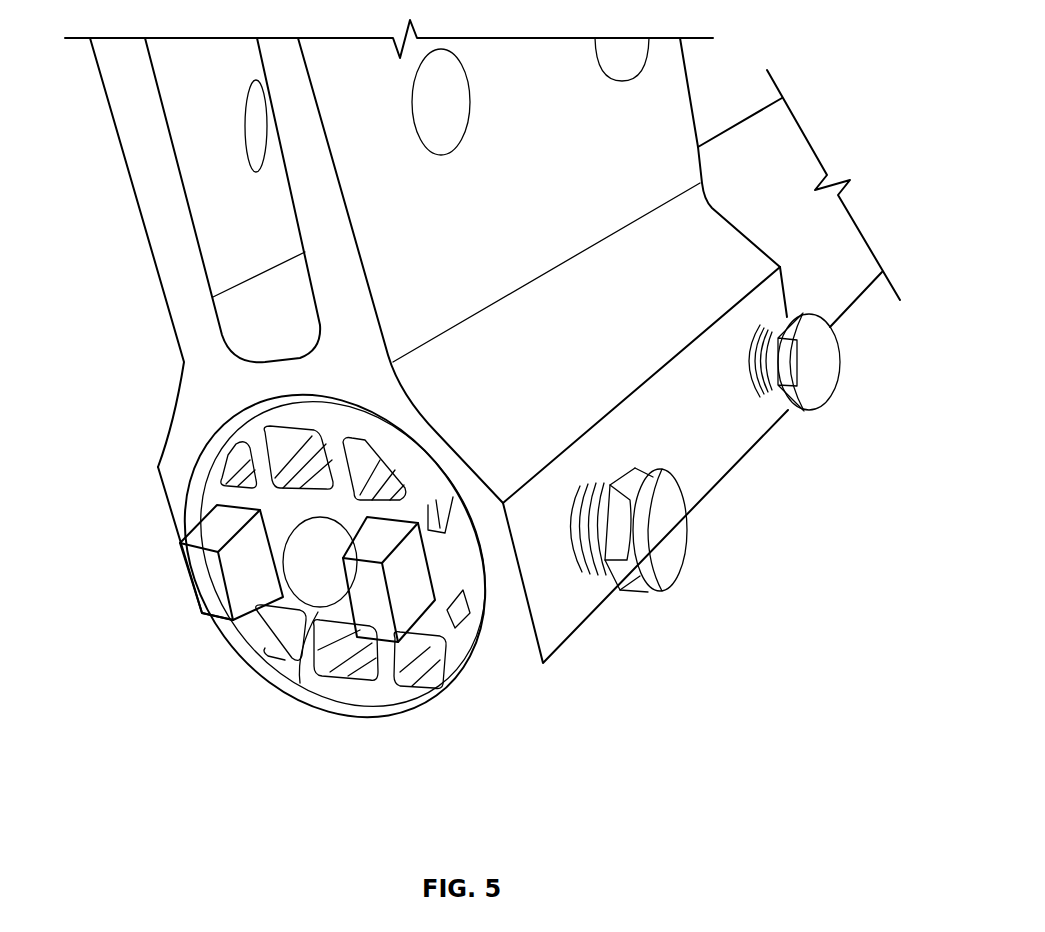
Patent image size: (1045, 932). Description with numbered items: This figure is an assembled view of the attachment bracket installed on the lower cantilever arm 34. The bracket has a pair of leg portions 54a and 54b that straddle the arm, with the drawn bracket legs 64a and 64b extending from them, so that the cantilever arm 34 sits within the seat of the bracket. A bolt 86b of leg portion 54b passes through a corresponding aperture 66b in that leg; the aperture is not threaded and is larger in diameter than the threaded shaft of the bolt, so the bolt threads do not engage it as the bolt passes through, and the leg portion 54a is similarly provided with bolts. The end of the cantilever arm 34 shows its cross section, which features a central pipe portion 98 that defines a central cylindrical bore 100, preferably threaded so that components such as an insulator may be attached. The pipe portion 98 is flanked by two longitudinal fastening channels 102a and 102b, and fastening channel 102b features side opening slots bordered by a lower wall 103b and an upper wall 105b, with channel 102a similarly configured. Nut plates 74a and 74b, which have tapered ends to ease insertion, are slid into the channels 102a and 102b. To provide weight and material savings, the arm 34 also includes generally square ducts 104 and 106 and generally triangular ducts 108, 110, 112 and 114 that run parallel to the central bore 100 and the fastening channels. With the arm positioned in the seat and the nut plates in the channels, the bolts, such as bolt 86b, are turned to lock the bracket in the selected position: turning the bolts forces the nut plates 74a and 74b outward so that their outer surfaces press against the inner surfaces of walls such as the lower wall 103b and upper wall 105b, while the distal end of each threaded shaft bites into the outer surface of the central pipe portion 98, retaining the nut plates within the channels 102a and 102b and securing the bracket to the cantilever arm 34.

The lower cantilever arm 34 is at (260, 393).
The leg portion 54a is at (165, 510).
The leg portion 54b is at (702, 452).
The leg portion 64a is at (130, 150).
The leg portion 64b is at (572, 150).
The aperture 66b is at (568, 555).
The nut plate 74a is at (208, 590).
The nut plate 74b is at (380, 623).
The bolt 86b is at (652, 532).
The central pipe portion 98 is at (340, 612).
The central cylindrical bore 100 is at (300, 683).
The fastening channel 102a is at (290, 632).
The fastening channel 102b is at (377, 513).
The lower wall 103b is at (462, 665).
The square duct 104 is at (297, 443).
The upper wall 105b is at (433, 500).
The square duct 106 is at (378, 668).
The triangular duct 108 is at (227, 460).
The triangular duct 110 is at (288, 648).
The triangular duct 112 is at (418, 670).
The triangular duct 114 is at (363, 465).